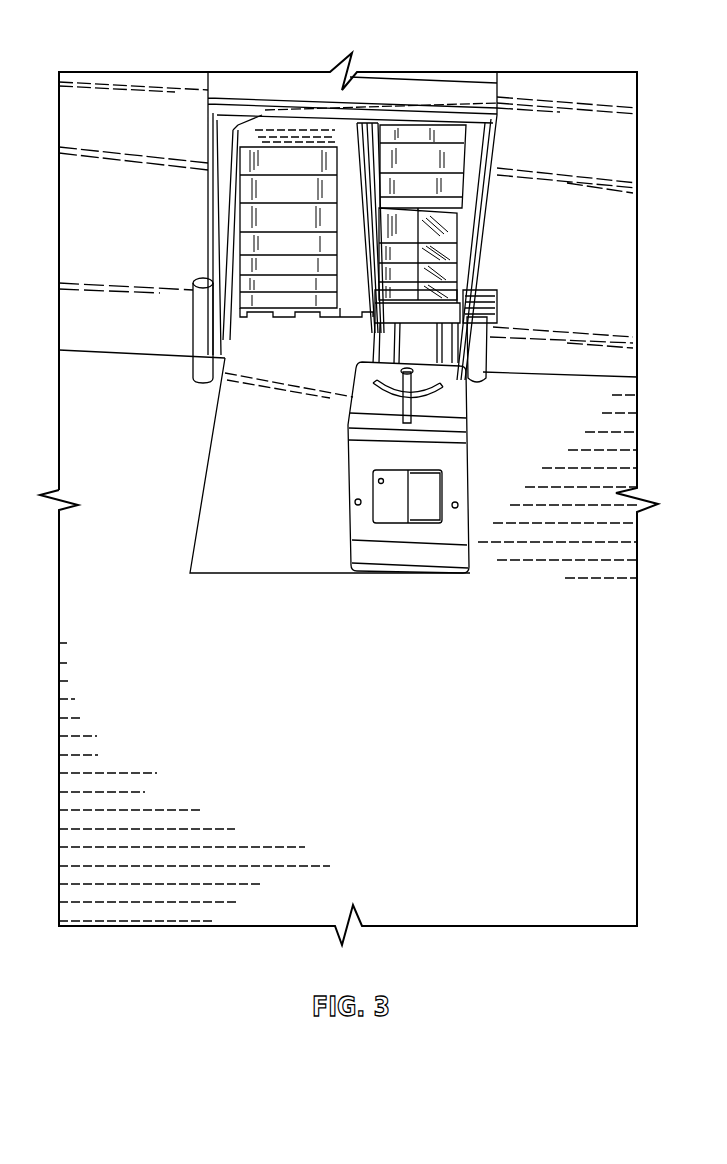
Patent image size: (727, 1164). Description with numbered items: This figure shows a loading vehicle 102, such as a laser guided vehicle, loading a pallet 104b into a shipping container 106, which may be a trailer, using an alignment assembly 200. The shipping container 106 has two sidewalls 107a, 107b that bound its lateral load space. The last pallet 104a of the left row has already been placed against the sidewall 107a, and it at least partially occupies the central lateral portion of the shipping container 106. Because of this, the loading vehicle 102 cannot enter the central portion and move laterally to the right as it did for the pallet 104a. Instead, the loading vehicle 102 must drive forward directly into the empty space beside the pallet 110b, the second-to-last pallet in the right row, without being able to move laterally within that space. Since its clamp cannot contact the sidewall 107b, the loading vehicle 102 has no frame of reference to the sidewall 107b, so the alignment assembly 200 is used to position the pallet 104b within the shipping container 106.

The loading vehicle 102 is at (470, 470).
The pallet 104a is at (296, 125).
The pallet 104b is at (452, 261).
The shipping container 106 is at (487, 153).
The sidewall 107a is at (238, 124).
The sidewall 107b is at (470, 196).
The pallet 110b is at (408, 147).
The alignment assembly 200 is at (478, 287).